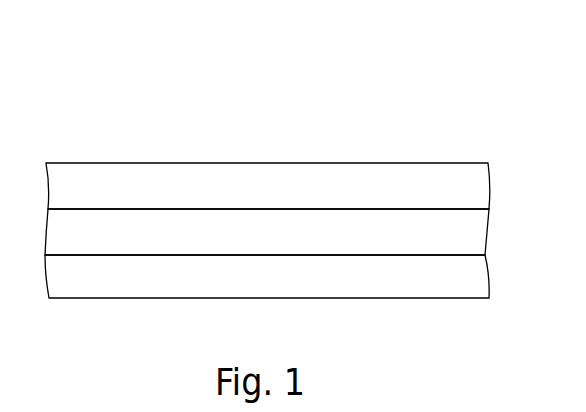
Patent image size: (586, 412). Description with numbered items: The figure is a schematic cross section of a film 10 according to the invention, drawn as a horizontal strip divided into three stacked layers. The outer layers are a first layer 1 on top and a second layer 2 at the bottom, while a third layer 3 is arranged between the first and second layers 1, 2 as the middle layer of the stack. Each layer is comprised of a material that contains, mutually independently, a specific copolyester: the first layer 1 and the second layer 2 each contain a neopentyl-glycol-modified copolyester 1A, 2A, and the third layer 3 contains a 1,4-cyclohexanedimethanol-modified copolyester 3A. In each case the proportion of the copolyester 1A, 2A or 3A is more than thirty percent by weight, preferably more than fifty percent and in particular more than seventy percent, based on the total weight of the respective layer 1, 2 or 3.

The film 10 is at (264, 182).
The first layer 1 is at (268, 162).
The neopentyl-glycol-modified copolyester 1A is at (148, 187).
The second layer 2 is at (264, 302).
The neopentyl-glycol-modified copolyester 2A is at (133, 278).
The third layer 3 is at (267, 186).
The 1,4-cyclohexanedimethanol-modified copolyester 3A is at (275, 233).